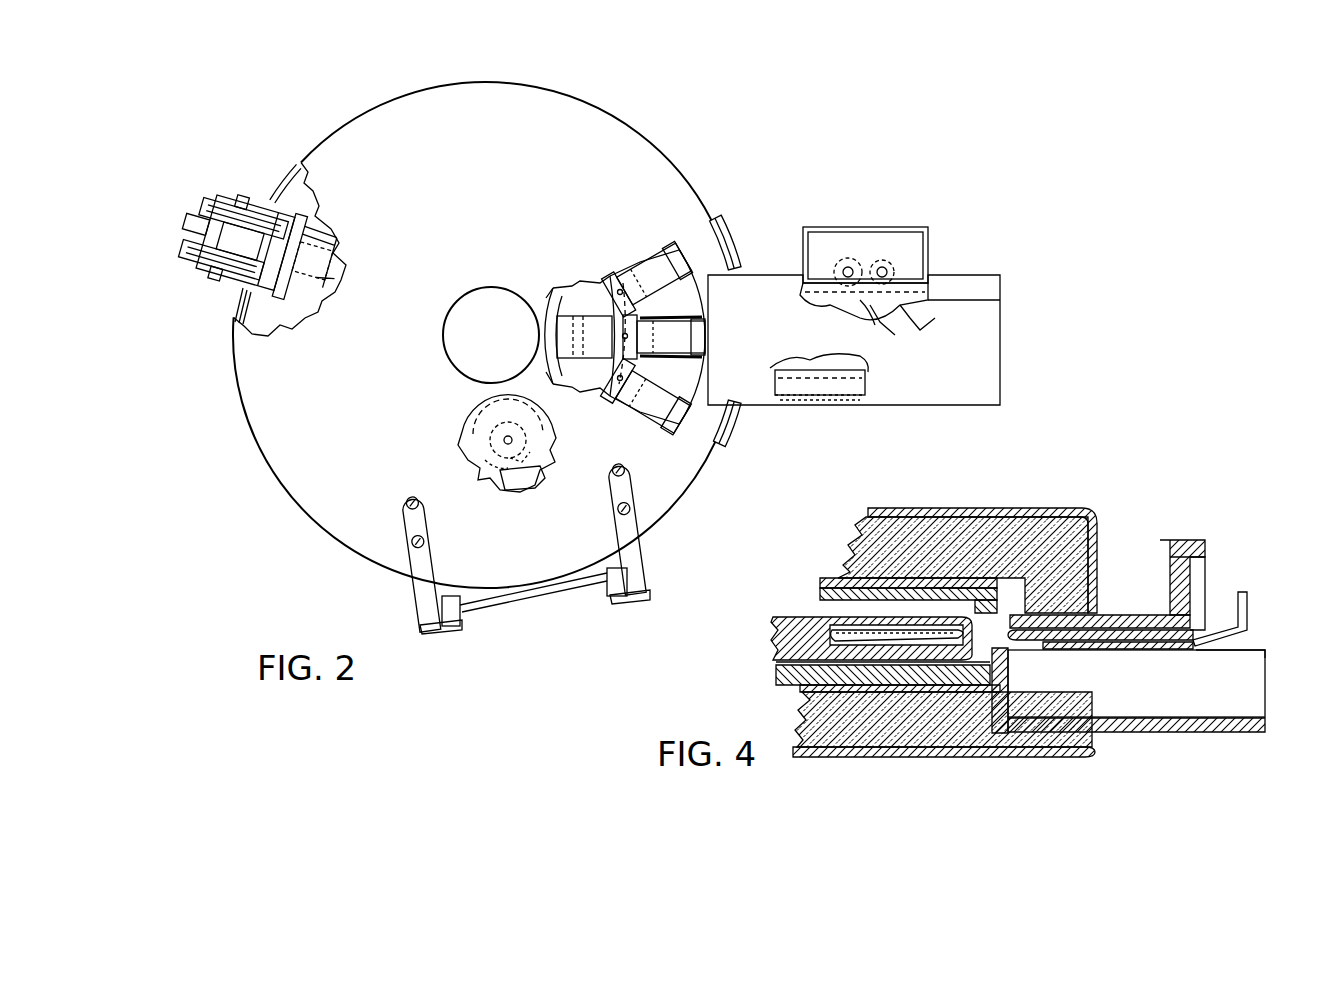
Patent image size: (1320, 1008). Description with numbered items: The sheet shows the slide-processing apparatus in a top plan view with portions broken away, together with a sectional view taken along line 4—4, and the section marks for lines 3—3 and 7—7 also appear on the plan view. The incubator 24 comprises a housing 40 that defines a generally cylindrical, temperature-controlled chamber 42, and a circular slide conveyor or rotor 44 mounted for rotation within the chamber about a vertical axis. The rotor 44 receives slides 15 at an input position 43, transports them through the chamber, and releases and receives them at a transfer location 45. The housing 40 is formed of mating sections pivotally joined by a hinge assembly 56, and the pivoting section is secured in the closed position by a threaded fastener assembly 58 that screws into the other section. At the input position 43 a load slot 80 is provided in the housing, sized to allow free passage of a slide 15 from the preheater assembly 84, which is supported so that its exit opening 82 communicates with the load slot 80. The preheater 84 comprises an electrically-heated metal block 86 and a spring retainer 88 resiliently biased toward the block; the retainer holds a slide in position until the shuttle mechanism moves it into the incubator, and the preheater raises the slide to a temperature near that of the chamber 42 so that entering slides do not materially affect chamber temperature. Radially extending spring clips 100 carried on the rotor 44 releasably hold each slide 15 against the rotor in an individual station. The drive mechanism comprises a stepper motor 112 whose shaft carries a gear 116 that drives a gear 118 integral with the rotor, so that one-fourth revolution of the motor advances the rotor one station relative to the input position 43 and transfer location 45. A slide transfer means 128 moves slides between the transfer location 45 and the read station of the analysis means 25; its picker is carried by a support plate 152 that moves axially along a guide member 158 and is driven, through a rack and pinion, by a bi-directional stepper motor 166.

In FIG. 2, the section line 3- 3 is at (452, 102).
In FIG. 2, the section line 4- 4 is at (208, 222).
In FIG. 2, the section line 7- 7 is at (570, 337).
In FIG. 4, the slide 15 is at (1212, 644).
In FIG. 2, the incubator 24 is at (665, 136).
In FIG. 4, the incubator 24 is at (992, 498).
In FIG. 2, the analysis means 25 is at (776, 262).
In FIG. 2, the housing 40 is at (583, 199).
In FIG. 4, the temperature-controlled chamber 42 is at (908, 610).
In FIG. 2, the input position 43 is at (262, 272).
In FIG. 4, the input position 43 is at (982, 652).
In FIG. 4, the rotor 44 is at (785, 644).
In FIG. 2, the transfer location 45 is at (674, 302).
In FIG. 2, the hinge assembly 56 is at (652, 563).
In FIG. 2, the threaded fastener assembly 58 is at (504, 346).
In FIG. 4, the load slot 80 is at (1001, 636).
In FIG. 4, the exit opening 82 is at (1044, 642).
In FIG. 2, the preheater assembly 84 is at (251, 190).
In FIG. 4, the preheater assembly 84 is at (1122, 503).
In FIG. 4, the electrically-heated metal block 86 is at (1202, 708).
In FIG. 4, the spring retainer 88 is at (1243, 591).
In FIG. 2, the spring clips 100 is at (322, 240).
In FIG. 4, the spring clips 100 is at (825, 618).
In FIG. 2, the stepper motor 112 is at (528, 480).
In FIG. 2, the gear 116 is at (543, 432).
In FIG. 2, the gear 118 is at (598, 290).
In FIG. 2, the slide transfer means 128 is at (948, 260).
In FIG. 2, the support plate 152 is at (830, 380).
In FIG. 2, the guide member 158 is at (885, 320).
In FIG. 2, the bi-directional stepper motor 166 is at (850, 232).